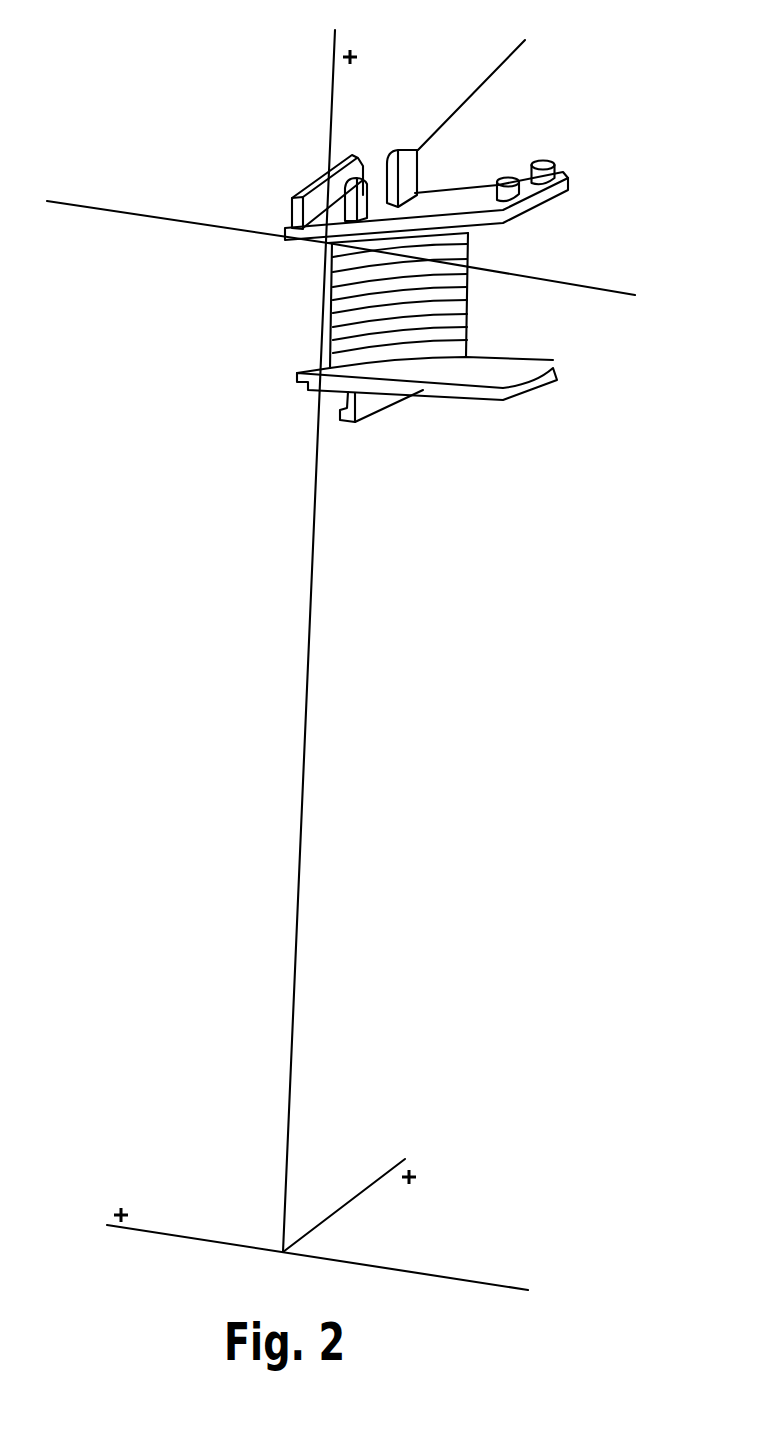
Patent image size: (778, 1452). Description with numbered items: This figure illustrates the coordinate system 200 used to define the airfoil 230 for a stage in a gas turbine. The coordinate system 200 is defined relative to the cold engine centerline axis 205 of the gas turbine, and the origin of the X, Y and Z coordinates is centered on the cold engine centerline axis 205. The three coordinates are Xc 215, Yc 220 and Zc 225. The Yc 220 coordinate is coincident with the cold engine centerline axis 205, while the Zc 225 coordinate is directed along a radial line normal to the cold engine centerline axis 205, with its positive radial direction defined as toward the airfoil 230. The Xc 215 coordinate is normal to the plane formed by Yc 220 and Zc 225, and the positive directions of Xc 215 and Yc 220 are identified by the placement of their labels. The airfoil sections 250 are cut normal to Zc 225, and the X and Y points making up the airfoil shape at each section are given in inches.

The coordinate system 200 is at (580, 838).
The cold engine centerline axis 205 is at (493, 1283).
The Xc coordinate 215 is at (362, 1217).
The Yc coordinate 220 is at (208, 1202).
The Zc coordinate 225 is at (357, 630).
The airfoil 230 is at (488, 303).
The airfoil sections 250 is at (467, 259).